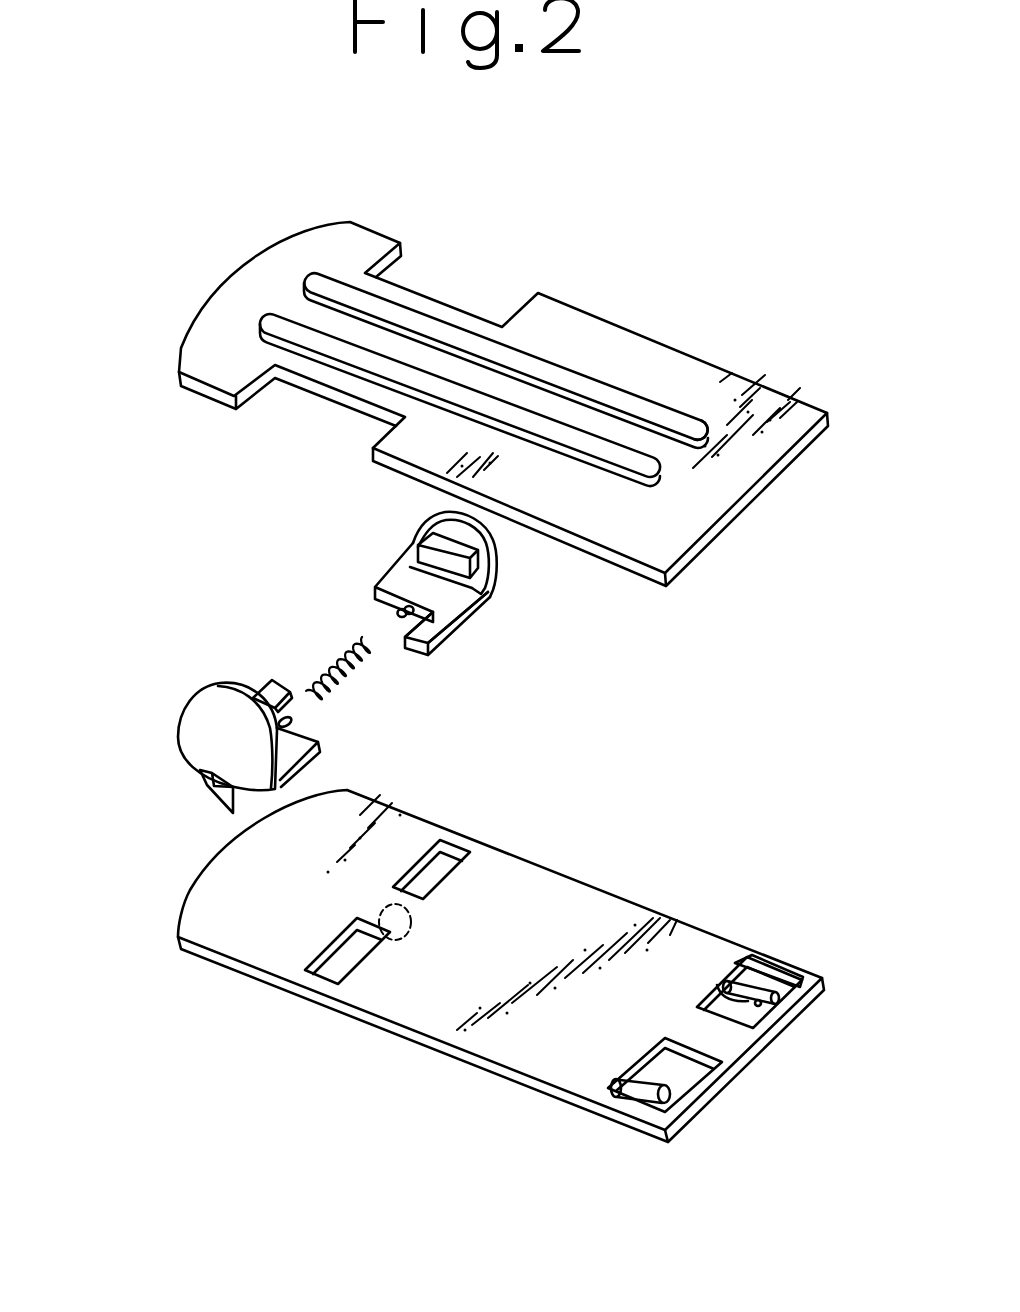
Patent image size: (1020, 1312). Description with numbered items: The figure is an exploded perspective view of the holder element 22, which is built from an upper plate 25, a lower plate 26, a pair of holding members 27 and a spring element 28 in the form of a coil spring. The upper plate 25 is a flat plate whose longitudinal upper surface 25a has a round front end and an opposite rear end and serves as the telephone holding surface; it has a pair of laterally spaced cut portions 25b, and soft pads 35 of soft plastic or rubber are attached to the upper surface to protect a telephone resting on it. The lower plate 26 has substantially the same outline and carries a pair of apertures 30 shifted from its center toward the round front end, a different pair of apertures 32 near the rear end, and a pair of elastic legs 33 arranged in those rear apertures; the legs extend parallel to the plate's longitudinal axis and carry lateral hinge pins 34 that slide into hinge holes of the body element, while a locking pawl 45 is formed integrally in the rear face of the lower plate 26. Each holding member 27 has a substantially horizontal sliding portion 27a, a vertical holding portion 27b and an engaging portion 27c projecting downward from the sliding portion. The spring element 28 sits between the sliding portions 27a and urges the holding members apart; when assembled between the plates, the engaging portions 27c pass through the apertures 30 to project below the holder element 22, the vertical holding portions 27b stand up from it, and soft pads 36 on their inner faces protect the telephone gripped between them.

The holder element 22 is at (630, 722).
The upper plate 25 is at (203, 313).
The longitudinal upper surface 25a is at (723, 382).
The cut portions 25b is at (478, 282).
The soft pads 35 is at (638, 402).
The lower plate 26 is at (197, 897).
The holding members 27 is at (393, 583).
The horizontal sliding portion 27a is at (457, 607).
The vertical holding portion 27b is at (500, 548).
The engaging portion 27c is at (207, 787).
The spring element 28 is at (350, 685).
The apertures 30 is at (460, 848).
The apertures 32 is at (688, 1075).
The elastic legs 33 is at (638, 1092).
The hinge pins 34 is at (717, 985).
The soft pads 36 is at (428, 555).
The locking pawl 45 is at (393, 950).